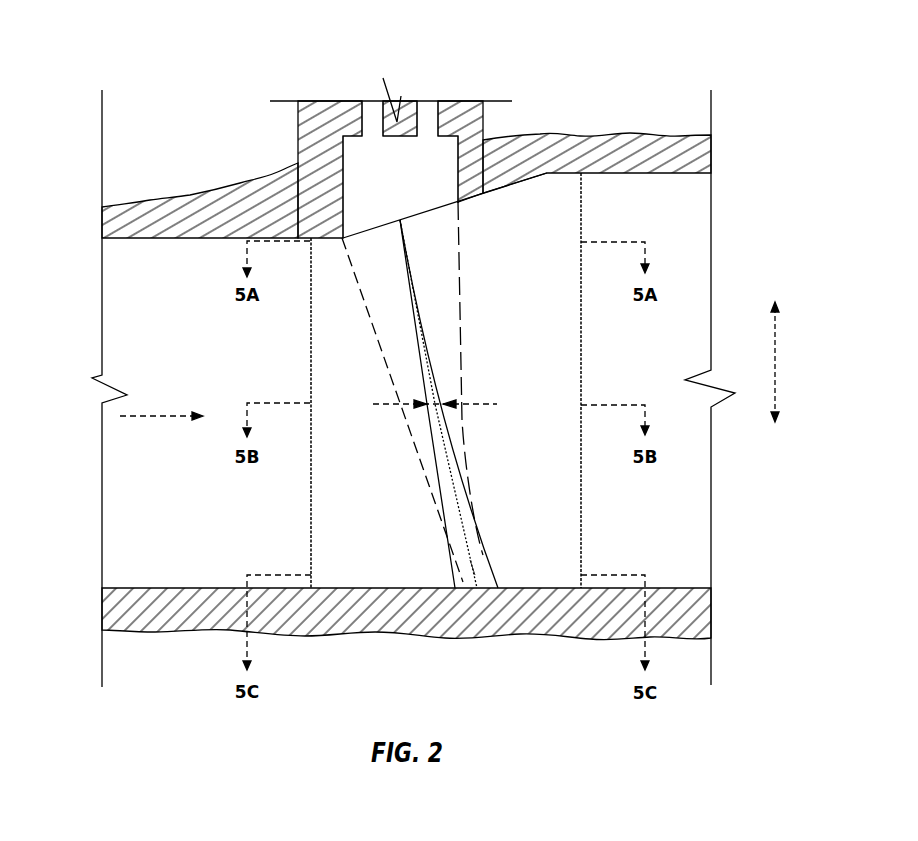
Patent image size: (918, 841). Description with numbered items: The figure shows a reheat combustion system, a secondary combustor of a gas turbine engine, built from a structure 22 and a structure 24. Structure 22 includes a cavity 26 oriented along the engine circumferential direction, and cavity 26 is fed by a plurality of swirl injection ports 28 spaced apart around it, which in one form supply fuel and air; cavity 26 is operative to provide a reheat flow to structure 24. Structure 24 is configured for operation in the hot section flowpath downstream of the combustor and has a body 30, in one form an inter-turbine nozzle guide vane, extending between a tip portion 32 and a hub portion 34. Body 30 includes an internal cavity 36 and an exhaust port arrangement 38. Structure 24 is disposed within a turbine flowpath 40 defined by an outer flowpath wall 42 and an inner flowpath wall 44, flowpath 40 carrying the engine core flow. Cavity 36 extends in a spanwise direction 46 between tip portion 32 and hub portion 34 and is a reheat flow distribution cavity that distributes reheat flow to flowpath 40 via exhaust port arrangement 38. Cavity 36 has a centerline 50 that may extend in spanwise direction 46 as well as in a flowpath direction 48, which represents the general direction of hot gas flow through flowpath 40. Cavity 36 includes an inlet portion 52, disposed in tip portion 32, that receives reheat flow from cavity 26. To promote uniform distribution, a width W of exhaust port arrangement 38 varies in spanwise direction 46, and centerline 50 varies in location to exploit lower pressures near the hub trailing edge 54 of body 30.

The structure 22 is at (298, 138).
The structure 24 is at (690, 235).
The cavity 26 is at (400, 187).
The swirl injection ports 28 is at (372, 110).
The body 30 is at (311, 517).
The tip portion 32 is at (276, 302).
The hub portion 34 is at (252, 551).
The internal cavity 36 is at (458, 297).
The exhaust port arrangement 38 is at (430, 362).
The turbine flowpath 40 is at (425, 364).
The outer flowpath wall 42 is at (200, 240).
The inner flowpath wall 44 is at (190, 588).
The spanwise direction 46 is at (775, 363).
The flowpath direction 48 is at (173, 419).
The centerline 50 is at (472, 565).
The inlet portion 52 is at (458, 203).
The hub trailing edge 54 is at (594, 558).
The width W is at (473, 403).